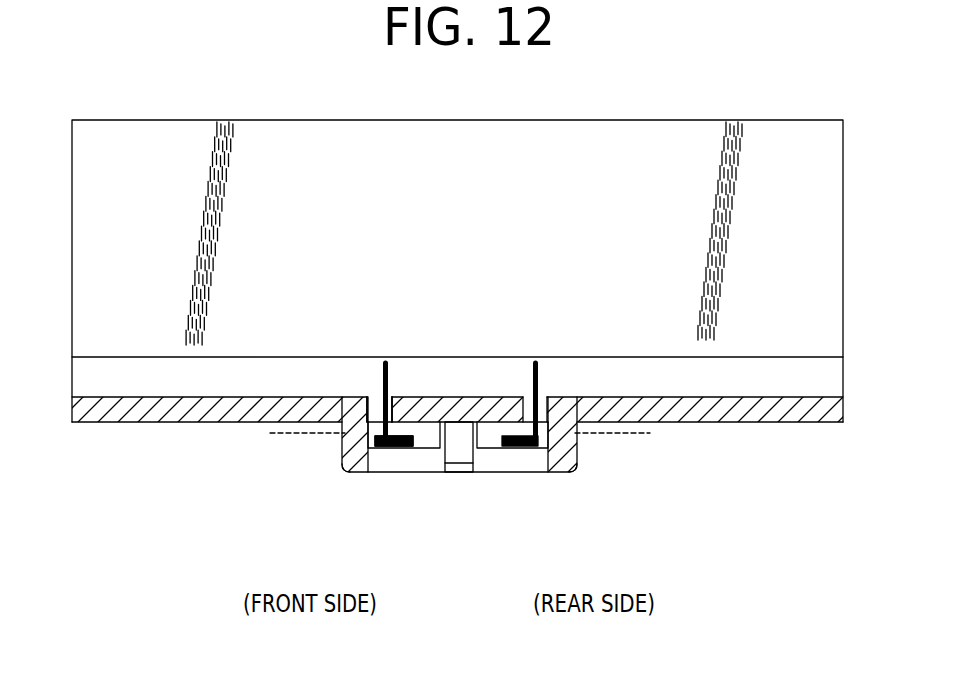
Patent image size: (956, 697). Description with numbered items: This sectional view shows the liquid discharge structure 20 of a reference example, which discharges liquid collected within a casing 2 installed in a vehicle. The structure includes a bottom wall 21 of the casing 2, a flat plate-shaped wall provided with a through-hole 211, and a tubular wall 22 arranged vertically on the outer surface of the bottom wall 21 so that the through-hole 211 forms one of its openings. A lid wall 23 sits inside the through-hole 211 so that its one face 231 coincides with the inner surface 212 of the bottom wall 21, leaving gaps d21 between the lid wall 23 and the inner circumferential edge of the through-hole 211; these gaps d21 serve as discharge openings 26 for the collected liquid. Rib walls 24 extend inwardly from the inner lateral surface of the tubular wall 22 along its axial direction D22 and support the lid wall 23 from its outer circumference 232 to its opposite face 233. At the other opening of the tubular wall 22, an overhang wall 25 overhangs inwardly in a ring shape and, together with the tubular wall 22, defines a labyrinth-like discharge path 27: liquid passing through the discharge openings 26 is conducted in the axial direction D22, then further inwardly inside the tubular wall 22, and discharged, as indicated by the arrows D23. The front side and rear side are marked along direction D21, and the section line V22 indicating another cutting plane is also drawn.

The casing 2 is at (478, 104).
The liquid discharge structure 20 is at (189, 445).
The bottom wall 21 is at (820, 425).
The tubular wall 22 is at (342, 456).
The lid wall 23 is at (441, 386).
The rib wall 24 is at (470, 473).
The overhang wall 25 is at (358, 475).
The discharge opening 26 is at (378, 392).
The labyrinth-like discharge path 27 is at (378, 392).
The through-hole 211 is at (378, 392).
The inner surface 212 is at (748, 356).
The one face 231 is at (477, 420).
The outer circumference 232 is at (386, 362).
The opposite face 233 is at (429, 450).
The line V22- V22 is at (288, 423).
The gap d21 is at (607, 310).
The front-rear direction D21 is at (515, 606).
The axial direction D22 is at (702, 465).
The arrows indicating liquid flow D23 is at (410, 492).